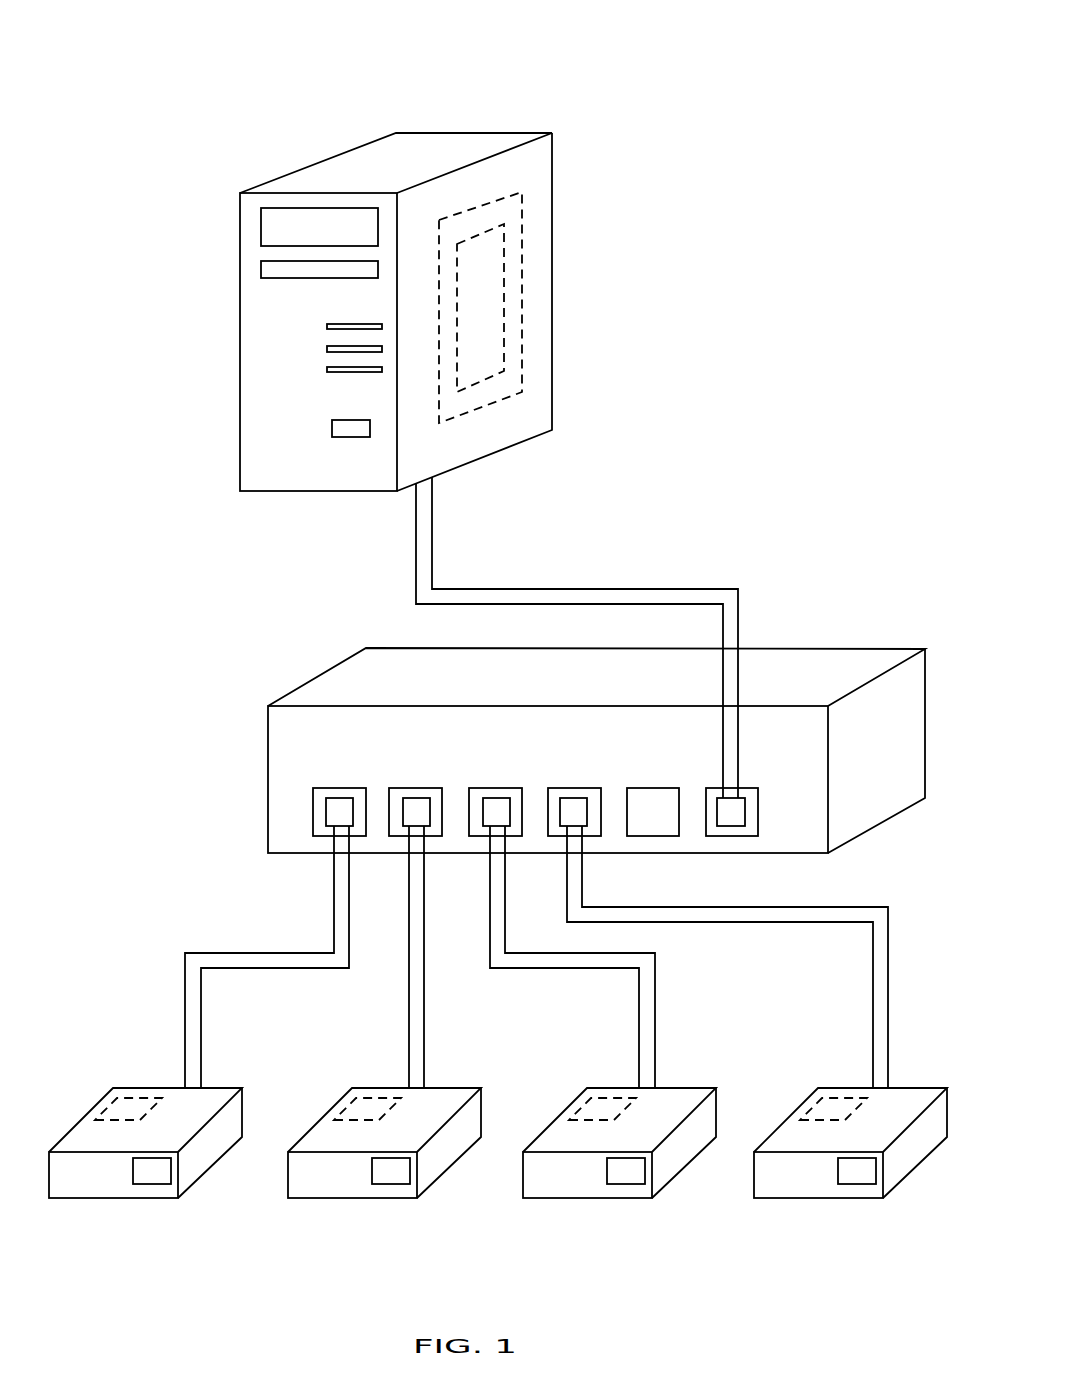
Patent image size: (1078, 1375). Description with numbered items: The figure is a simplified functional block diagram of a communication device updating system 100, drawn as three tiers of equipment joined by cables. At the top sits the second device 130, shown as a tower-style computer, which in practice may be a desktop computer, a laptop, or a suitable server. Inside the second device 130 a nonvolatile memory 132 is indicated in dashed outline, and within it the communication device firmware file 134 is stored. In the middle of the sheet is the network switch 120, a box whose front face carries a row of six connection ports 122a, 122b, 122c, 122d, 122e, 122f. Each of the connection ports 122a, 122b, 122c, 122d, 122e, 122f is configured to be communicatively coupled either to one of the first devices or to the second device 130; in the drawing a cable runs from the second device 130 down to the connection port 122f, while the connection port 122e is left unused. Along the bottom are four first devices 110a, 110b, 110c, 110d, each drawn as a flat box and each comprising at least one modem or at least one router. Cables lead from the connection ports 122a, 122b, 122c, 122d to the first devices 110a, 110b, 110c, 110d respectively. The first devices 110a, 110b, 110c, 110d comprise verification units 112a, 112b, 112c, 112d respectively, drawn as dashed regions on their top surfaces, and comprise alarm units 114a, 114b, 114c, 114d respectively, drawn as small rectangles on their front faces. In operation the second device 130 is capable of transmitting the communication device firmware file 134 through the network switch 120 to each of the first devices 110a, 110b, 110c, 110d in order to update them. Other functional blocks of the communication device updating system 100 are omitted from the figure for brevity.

The communication device updating system 100 is at (145, 68).
The second device 130 is at (435, 291).
The nonvolatile memory 132 is at (522, 245).
The communication device firmware file 134 is at (480, 308).
The network switch 120 is at (323, 672).
The connection port 122a is at (337, 787).
The connection port 122b is at (420, 787).
The connection port 122c is at (500, 787).
The connection port 122d is at (586, 787).
The connection port 122e is at (663, 787).
The connection port 122f is at (758, 807).
The first device 110a is at (145, 1153).
The first device 110b is at (384, 1153).
The first device 110c is at (619, 1153).
The first device 110d is at (850, 1153).
The verification unit 112a is at (128, 1095).
The verification unit 112b is at (367, 1095).
The verification unit 112c is at (602, 1095).
The verification unit 112d is at (833, 1095).
The alarm unit 114a is at (160, 1187).
The alarm unit 114b is at (399, 1187).
The alarm unit 114c is at (640, 1205).
The alarm unit 114d is at (872, 1205).